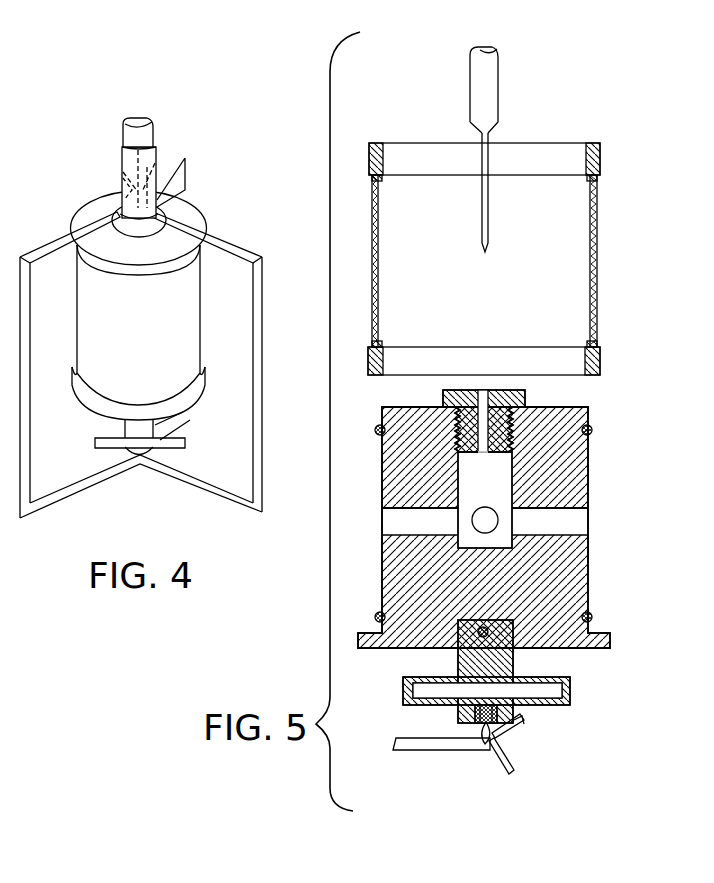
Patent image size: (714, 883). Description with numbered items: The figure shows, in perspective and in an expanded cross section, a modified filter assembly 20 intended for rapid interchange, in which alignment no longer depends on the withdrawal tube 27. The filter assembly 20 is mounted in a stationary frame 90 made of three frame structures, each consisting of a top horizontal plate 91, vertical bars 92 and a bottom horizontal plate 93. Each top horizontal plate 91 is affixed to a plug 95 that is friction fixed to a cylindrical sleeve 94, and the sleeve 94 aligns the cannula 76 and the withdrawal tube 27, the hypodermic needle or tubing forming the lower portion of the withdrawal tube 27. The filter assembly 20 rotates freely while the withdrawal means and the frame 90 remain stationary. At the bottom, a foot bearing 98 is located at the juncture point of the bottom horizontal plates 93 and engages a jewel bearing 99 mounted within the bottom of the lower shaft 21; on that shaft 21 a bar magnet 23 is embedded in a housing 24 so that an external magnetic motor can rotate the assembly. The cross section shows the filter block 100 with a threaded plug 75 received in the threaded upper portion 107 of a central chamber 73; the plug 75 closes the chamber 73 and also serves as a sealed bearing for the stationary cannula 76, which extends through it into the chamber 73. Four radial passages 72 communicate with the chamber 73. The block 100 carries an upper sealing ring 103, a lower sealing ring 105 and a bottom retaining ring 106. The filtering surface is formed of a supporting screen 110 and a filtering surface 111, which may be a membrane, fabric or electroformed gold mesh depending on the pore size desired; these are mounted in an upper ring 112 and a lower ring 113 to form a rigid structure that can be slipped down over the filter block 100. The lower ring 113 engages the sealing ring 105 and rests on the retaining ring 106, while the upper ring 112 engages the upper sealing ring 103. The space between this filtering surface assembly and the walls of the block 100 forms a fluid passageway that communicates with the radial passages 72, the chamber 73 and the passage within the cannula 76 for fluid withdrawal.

In FIG. 4, the filter assembly 20 is at (205, 316).
In FIG. 4, the lower shaft 21 is at (125, 430).
In FIG. 5, the lower shaft 21 is at (462, 668).
In FIG. 5, the bar magnet 23 is at (415, 689).
In FIG. 4, the housing 24 is at (188, 445).
In FIG. 5, the housing 24 is at (405, 698).
In FIG. 4, the withdrawal tube 27 is at (148, 137).
In FIG. 5, the withdrawal tube 27 is at (493, 104).
In FIG. 5, the radial passages 72 is at (568, 522).
In FIG. 5, the central chamber 73 is at (497, 489).
In FIG. 4, the threaded plug 75 is at (162, 210).
In FIG. 5, the threaded plug 75 is at (445, 400).
In FIG. 4, the cannula 76 is at (158, 163).
In FIG. 5, the cannula 76 is at (489, 213).
In FIG. 4, the frame 90 is at (244, 238).
In FIG. 4, the top horizontal plate 91 is at (207, 240).
In FIG. 4, the vertical bars 92 is at (258, 388).
In FIG. 4, the bottom horizontal plate 93 is at (200, 487).
In FIG. 5, the bottom horizontal plate 93 is at (414, 749).
In FIG. 4, the cylindrical sleeve 94 is at (162, 183).
In FIG. 4, the plug 95 is at (125, 190).
In FIG. 5, the foot bearing 98 is at (485, 742).
In FIG. 5, the jewel bearing 99 is at (510, 733).
In FIG. 5, the filter block 100 is at (578, 478).
In FIG. 5, the upper sealing ring 103 is at (590, 429).
In FIG. 5, the lower sealing ring 105 is at (592, 620).
In FIG. 5, the bottom retaining ring 106 is at (598, 640).
In FIG. 5, the threaded bore 107 is at (488, 424).
In FIG. 5, the supporting screen 110 is at (599, 202).
In FIG. 5, the filtering surface 111 is at (598, 236).
In FIG. 5, the upper ring 112 is at (591, 144).
In FIG. 5, the lower ring 113 is at (601, 373).